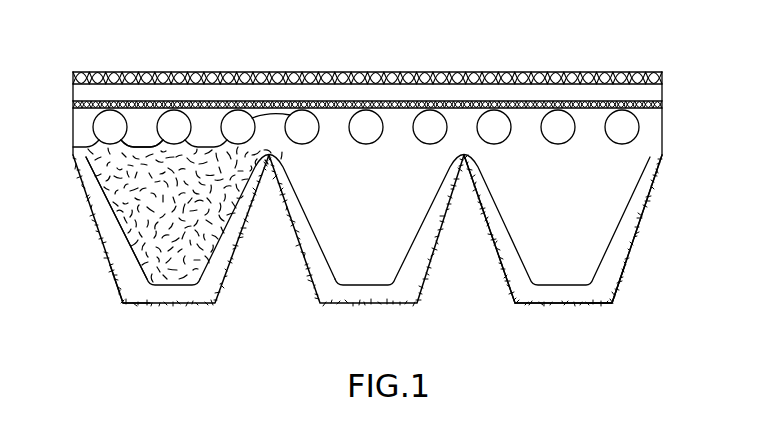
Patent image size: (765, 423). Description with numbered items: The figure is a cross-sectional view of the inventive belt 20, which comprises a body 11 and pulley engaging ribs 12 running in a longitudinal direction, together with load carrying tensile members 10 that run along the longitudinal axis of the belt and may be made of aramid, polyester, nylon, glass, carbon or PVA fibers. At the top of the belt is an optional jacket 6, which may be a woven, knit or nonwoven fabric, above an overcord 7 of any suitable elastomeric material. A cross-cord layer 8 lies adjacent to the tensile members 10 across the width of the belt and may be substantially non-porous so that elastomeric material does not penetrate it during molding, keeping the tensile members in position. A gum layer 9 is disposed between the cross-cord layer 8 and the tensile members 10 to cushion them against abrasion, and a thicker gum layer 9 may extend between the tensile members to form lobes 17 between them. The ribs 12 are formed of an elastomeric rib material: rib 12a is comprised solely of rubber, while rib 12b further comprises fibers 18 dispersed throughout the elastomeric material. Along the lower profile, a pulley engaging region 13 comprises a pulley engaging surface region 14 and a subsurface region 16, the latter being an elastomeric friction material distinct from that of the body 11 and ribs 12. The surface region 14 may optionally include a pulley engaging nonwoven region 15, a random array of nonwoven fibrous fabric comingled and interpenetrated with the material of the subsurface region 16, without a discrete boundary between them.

The jacket 6 is at (534, 76).
The overcord 7 is at (672, 85).
The cross-cord layer 8 is at (174, 98).
The gum layer 9 is at (664, 103).
The tensile members 10 is at (623, 122).
The body 11 is at (627, 162).
The pulley engaging ribs 12 is at (582, 199).
The rib 12a is at (372, 218).
The rib 12b is at (157, 220).
The pulley engaging region 13 is at (650, 251).
The pulley engaging surface region 14 is at (620, 283).
The pulley engaging nonwoven region 15 is at (140, 307).
The subsurface region 16 is at (555, 292).
The lobes 17 is at (142, 134).
The fibers 18 is at (118, 162).
The belt 20 is at (445, 64).